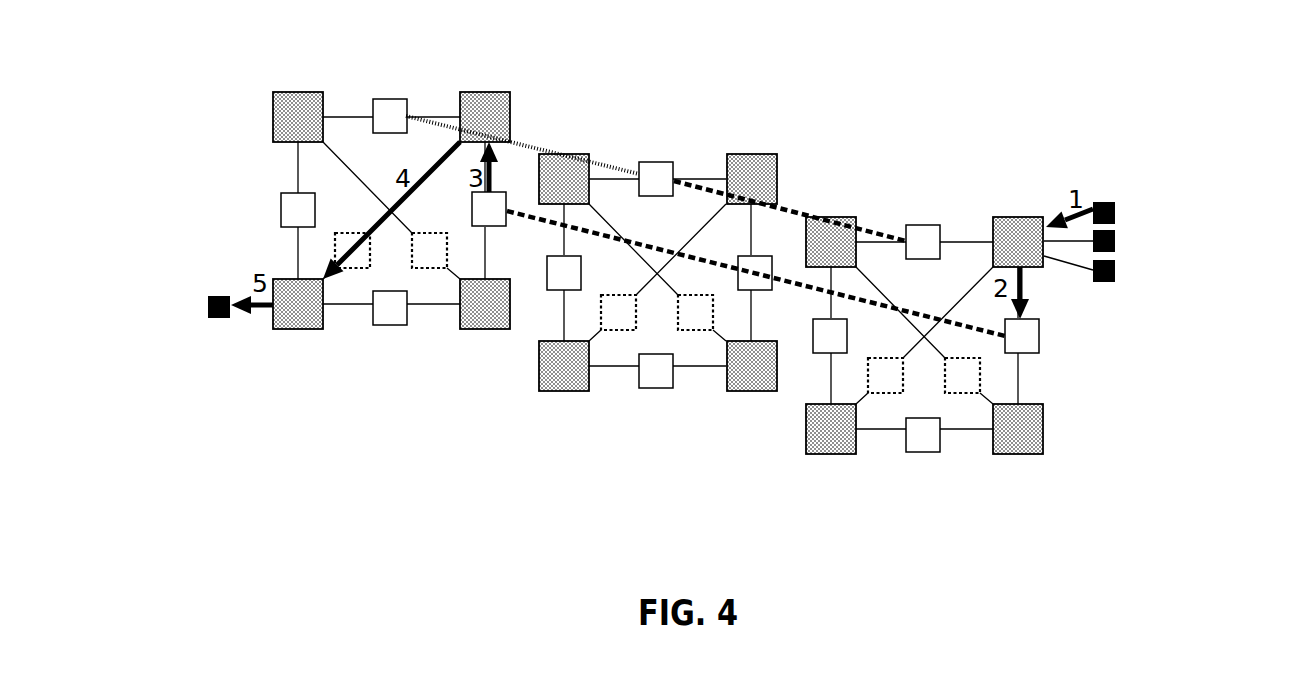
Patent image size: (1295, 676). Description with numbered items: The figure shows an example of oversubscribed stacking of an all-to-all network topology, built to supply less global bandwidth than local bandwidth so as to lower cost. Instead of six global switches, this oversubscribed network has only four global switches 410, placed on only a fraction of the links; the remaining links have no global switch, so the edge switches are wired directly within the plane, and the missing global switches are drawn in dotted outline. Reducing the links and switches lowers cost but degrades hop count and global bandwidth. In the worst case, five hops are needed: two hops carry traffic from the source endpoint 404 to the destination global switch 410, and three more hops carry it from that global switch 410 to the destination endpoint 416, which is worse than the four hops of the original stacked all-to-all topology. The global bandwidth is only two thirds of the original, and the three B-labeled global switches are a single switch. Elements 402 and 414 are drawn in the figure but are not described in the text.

The network node 402 is at (300, 92).
The source endpoint 404 is at (1116, 263).
The global switch 410 is at (396, 99).
The network node 414 is at (498, 93).
The destination endpoint 416 is at (218, 318).